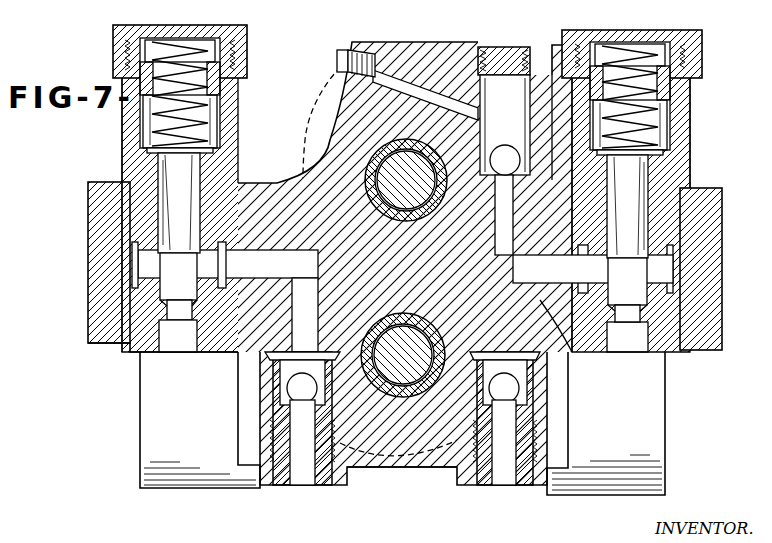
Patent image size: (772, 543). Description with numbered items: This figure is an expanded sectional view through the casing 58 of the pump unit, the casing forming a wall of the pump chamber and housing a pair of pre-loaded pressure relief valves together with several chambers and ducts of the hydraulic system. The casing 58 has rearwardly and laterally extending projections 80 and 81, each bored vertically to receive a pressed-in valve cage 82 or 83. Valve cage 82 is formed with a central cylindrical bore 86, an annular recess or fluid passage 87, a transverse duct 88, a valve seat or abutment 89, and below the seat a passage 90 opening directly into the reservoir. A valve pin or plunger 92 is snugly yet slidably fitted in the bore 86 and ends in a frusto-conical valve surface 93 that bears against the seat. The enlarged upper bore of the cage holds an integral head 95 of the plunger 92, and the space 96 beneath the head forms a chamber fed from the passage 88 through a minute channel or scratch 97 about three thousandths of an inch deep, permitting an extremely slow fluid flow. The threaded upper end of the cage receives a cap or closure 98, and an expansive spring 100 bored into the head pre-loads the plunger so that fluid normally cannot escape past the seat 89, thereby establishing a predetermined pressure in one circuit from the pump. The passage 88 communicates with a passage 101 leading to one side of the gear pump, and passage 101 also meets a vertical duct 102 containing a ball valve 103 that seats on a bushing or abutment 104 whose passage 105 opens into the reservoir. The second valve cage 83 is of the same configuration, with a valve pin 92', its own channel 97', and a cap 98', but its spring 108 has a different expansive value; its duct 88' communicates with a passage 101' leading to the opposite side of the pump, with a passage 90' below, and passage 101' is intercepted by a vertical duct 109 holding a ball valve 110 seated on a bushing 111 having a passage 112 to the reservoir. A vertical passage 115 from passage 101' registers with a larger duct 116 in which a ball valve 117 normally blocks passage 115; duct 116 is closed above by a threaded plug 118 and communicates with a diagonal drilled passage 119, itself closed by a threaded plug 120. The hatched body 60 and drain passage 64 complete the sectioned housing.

The casing 58 is at (407, 470).
The valve body 60 is at (420, 105).
The drain passage 64 is at (398, 385).
The projection 80 is at (97, 343).
The projection 81 is at (722, 345).
The valve cage 82 is at (122, 163).
The valve cage 83 is at (690, 126).
The central cylindrical bore 86 is at (150, 212).
The annular recess or fluid passage 87 is at (132, 251).
The transverse duct 88 is at (228, 240).
The duct 88' is at (633, 269).
The valve seat or abutment 89 is at (165, 314).
The passage 90 is at (177, 418).
The right foot 90' is at (632, 423).
The valve pin or plunger 92 is at (126, 203).
The valve pin 92' is at (671, 201).
The frusto-conical valve surface 93 is at (216, 350).
The head 95 is at (142, 117).
The space or chamber 96 is at (142, 150).
The minute channel or scratch 97 is at (219, 196).
The stem taper 97' is at (684, 206).
The cap or closure 98 is at (180, 177).
The cap 98' is at (648, 178).
The expansive spring 100 is at (180, 46).
The passage 101 is at (311, 121).
The passage 101' is at (586, 340).
The vertically arranged duct 102 is at (292, 314).
The ball valve 103 is at (290, 392).
The bushing or abutment 104 is at (272, 420).
The passage 105 is at (303, 472).
The spring or resilient member 108 is at (624, 55).
The vertical duct 109 is at (562, 368).
The ball valve 110 is at (518, 396).
The bushing 111 is at (535, 446).
The passage 112 is at (510, 483).
The vertically arranged duct or passage 115 is at (513, 215).
The duct 116 is at (520, 97).
The ball valve 117 is at (493, 148).
The threaded plug 118 is at (508, 47).
The drilled passage 119 is at (397, 75).
The threaded plug 120 is at (347, 52).